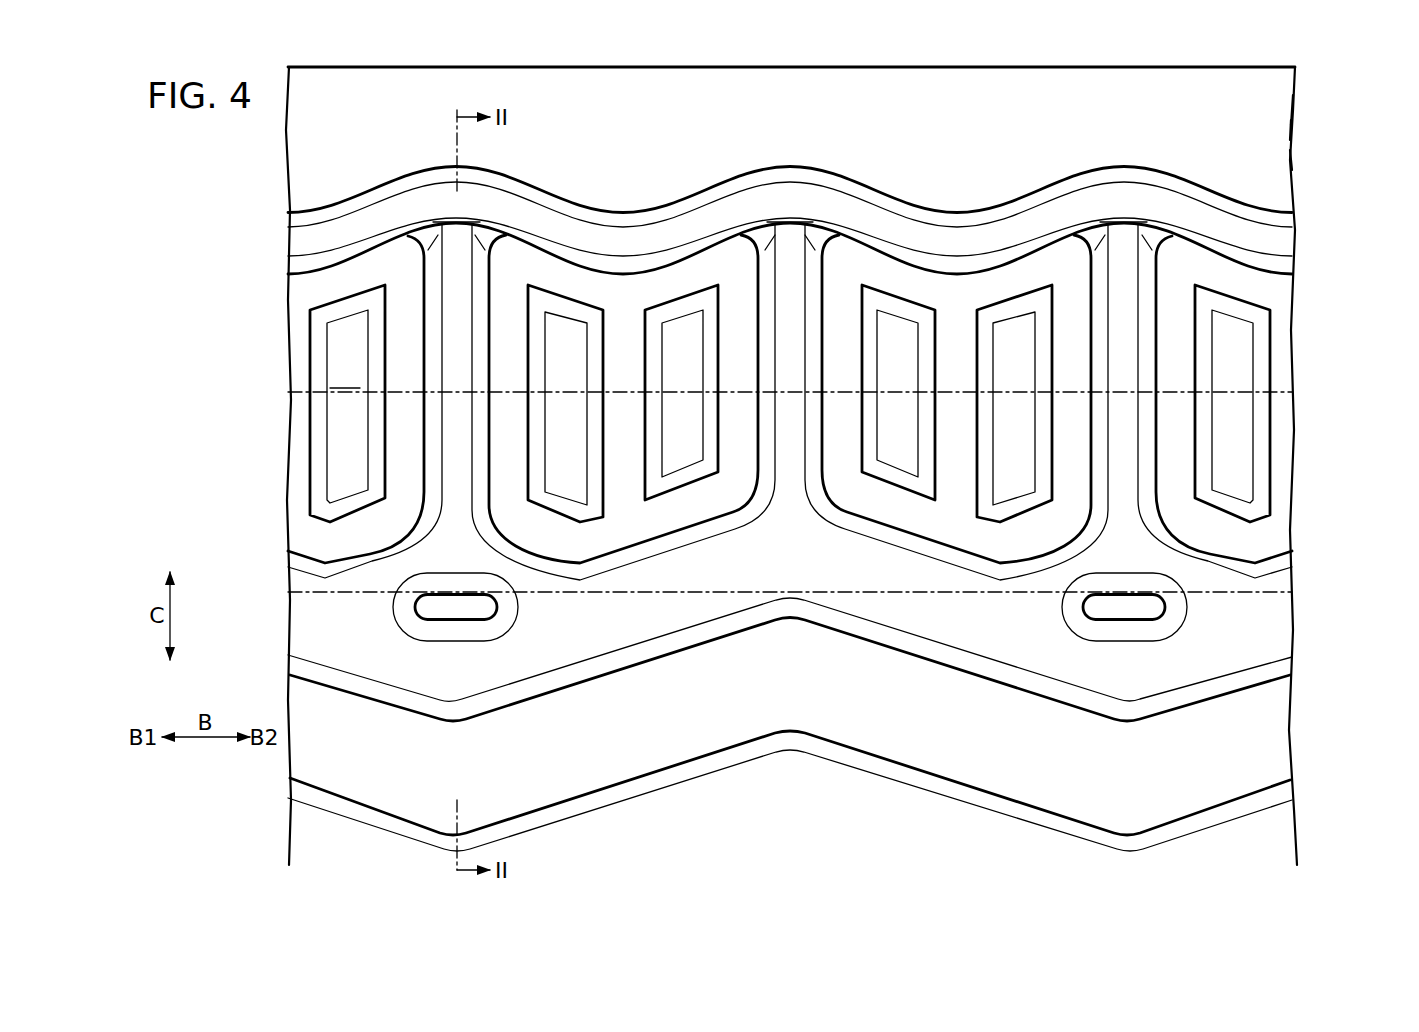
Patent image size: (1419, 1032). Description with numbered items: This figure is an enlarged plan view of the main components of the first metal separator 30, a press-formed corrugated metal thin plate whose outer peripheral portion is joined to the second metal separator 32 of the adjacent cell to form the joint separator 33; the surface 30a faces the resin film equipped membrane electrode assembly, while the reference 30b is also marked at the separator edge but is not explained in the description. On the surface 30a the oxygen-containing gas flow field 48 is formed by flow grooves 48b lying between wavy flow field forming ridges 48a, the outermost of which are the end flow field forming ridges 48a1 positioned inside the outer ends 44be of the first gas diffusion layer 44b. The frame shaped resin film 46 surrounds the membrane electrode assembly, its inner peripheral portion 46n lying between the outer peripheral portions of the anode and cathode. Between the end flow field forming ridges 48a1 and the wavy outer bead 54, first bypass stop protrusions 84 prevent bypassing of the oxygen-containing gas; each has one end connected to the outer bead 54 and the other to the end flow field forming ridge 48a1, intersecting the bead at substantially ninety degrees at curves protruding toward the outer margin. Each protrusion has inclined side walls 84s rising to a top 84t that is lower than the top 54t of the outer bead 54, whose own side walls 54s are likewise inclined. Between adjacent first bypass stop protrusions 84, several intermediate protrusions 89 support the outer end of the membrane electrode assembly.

The first metal separator 30 is at (1299, 79).
The second metal separator 32 is at (1298, 107).
The surface of the first metal separator 30a is at (1280, 125).
The panel inner surface 30b is at (1277, 158).
The joint separator 33 is at (184, 161).
The first gas diffusion layer 44b is at (353, 386).
The outer ends of the first gas diffusion layer 44be is at (343, 390).
The resin film 46 is at (595, 597).
The inner peripheral portion of the resin film 46n is at (547, 592).
The oxygen-containing gas flow field 48 is at (916, 795).
The flow field forming ridges 48a is at (1232, 653).
The end flow field forming ridges 48a1 is at (697, 565).
The flow grooves 48b is at (1217, 760).
The outer bead 54 is at (696, 194).
The top of the outer bead 54t is at (868, 213).
The side walls of the outer bead 54s is at (955, 267).
The first bypass stop protrusions 84 is at (791, 296).
The top of the first bypass stop protrusion 84t is at (457, 287).
The side walls of the first bypass stop protrusion 84s is at (437, 485).
The intermediate protrusions 89 is at (345, 465).